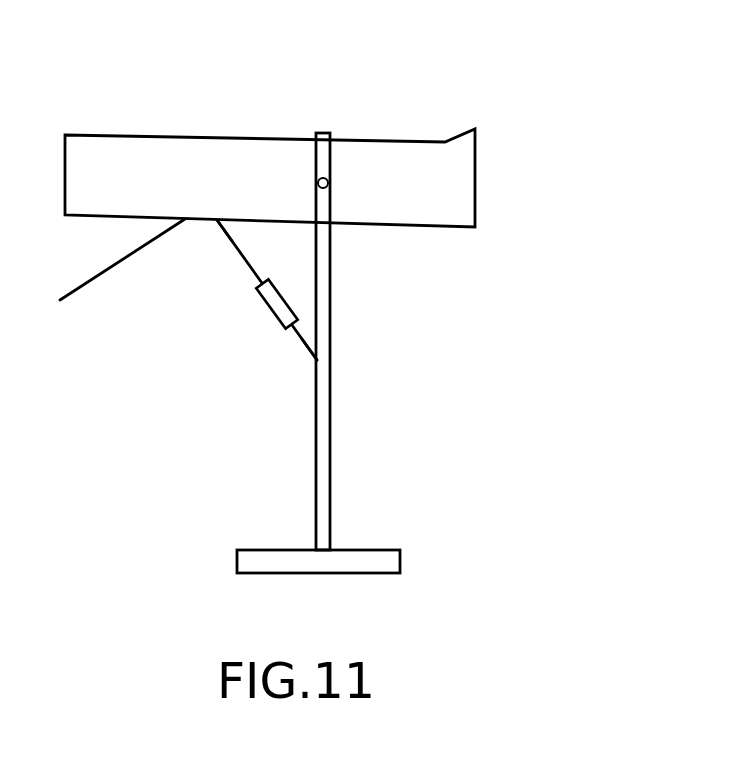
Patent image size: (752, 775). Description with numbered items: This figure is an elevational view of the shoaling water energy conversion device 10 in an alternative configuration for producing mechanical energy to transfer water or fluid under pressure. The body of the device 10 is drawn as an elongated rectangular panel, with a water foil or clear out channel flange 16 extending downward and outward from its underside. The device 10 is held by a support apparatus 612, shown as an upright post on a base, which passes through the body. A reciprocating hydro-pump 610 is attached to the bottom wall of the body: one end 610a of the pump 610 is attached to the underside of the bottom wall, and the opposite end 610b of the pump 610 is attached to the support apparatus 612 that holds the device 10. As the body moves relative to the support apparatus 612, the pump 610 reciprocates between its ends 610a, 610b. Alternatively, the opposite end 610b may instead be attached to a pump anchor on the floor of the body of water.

The shoaling water energy conversion device 10 is at (137, 153).
The water foil or clear out channel flange 16 is at (60, 300).
The reciprocating hydro-pump 610 is at (267, 307).
The one end of the pump 610a is at (213, 222).
The opposite end of the pump 610b is at (317, 360).
The support apparatus 612 is at (331, 437).